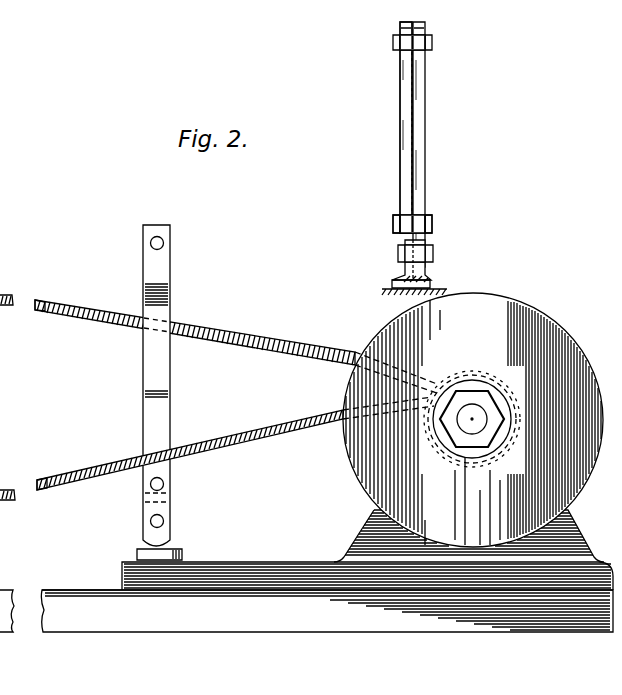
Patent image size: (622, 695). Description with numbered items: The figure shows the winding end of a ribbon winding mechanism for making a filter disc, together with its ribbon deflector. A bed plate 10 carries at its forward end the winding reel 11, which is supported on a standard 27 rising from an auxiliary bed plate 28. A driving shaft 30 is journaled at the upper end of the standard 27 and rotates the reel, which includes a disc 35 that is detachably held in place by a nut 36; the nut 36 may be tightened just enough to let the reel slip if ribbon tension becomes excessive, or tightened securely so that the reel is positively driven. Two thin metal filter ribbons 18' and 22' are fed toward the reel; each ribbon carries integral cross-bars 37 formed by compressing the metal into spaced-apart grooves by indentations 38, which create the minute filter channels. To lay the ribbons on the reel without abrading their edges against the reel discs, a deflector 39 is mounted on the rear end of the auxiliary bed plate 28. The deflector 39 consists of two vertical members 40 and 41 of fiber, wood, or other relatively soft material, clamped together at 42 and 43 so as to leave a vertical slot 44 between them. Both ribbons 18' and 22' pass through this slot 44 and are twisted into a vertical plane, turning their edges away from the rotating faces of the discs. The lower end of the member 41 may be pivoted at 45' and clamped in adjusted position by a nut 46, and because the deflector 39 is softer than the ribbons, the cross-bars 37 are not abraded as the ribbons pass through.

The bed plate 10 is at (338, 613).
The winding reel 11 is at (469, 403).
The ribbon 18' is at (22, 280).
The lower ribbon 22' is at (52, 466).
The standard 27 is at (572, 540).
The auxiliary bed plate 28 is at (266, 566).
The driving shaft 30 is at (468, 421).
The disc 35 is at (392, 340).
The nut 36 is at (460, 442).
The cross-bars 37 is at (90, 470).
The indentations 38 is at (56, 303).
The deflector 39 is at (170, 303).
The vertical member 40 is at (400, 107).
The vertical member 41 is at (421, 160).
The clamp 42 is at (150, 242).
The clamp 43 is at (393, 226).
The slot 44 is at (413, 178).
The pivot 45' is at (396, 267).
The nut 46 is at (150, 521).